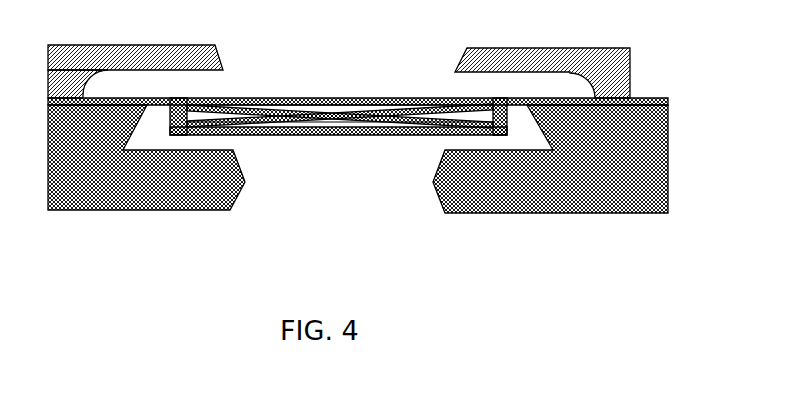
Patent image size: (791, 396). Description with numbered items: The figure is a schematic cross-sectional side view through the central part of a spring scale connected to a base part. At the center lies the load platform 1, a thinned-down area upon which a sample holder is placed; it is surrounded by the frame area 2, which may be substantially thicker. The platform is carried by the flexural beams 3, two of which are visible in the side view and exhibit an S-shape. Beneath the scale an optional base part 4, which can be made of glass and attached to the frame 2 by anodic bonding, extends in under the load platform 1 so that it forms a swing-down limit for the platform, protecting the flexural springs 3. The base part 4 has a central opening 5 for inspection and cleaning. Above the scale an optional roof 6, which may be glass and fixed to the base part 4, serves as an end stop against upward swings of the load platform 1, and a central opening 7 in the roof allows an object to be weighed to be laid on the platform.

The platform 1 is at (367, 136).
The frame area 2 is at (160, 98).
The flexural beams 3 is at (453, 118).
The base part 4 is at (137, 97).
The central opening 5 is at (443, 215).
The roof 6 is at (610, 48).
The central opening 7 is at (463, 37).